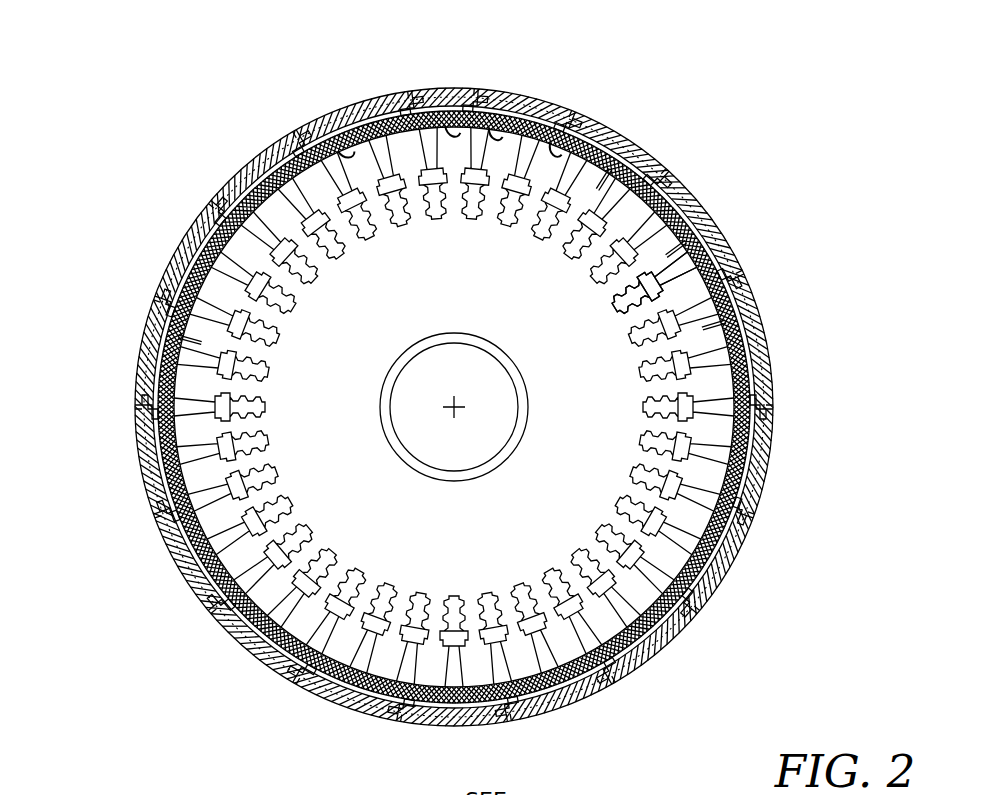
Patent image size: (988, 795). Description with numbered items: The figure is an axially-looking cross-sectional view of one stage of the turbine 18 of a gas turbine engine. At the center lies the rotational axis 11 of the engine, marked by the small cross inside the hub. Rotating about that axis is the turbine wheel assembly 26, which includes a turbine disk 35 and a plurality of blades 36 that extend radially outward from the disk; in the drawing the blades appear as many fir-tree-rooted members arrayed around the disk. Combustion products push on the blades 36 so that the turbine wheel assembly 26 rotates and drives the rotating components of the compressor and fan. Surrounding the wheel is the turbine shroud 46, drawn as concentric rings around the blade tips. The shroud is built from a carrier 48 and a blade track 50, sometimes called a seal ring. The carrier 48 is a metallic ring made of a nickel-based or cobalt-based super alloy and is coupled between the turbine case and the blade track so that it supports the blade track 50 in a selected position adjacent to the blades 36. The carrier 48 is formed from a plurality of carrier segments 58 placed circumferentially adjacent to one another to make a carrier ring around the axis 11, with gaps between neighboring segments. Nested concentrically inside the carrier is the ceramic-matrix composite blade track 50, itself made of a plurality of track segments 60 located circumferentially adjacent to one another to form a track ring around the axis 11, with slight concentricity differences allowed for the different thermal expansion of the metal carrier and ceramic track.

The rotational axis 11 is at (463, 406).
The turbine 18 is at (120, 170).
The turbine wheel assembly 26 is at (673, 260).
The turbine disk 35 is at (600, 370).
The blades 36 is at (622, 222).
The turbine shroud 46 is at (655, 150).
The carrier 48 is at (602, 108).
The blade track 50 is at (543, 138).
The carrier segments 58 is at (373, 88).
The track segments 60 is at (295, 138).